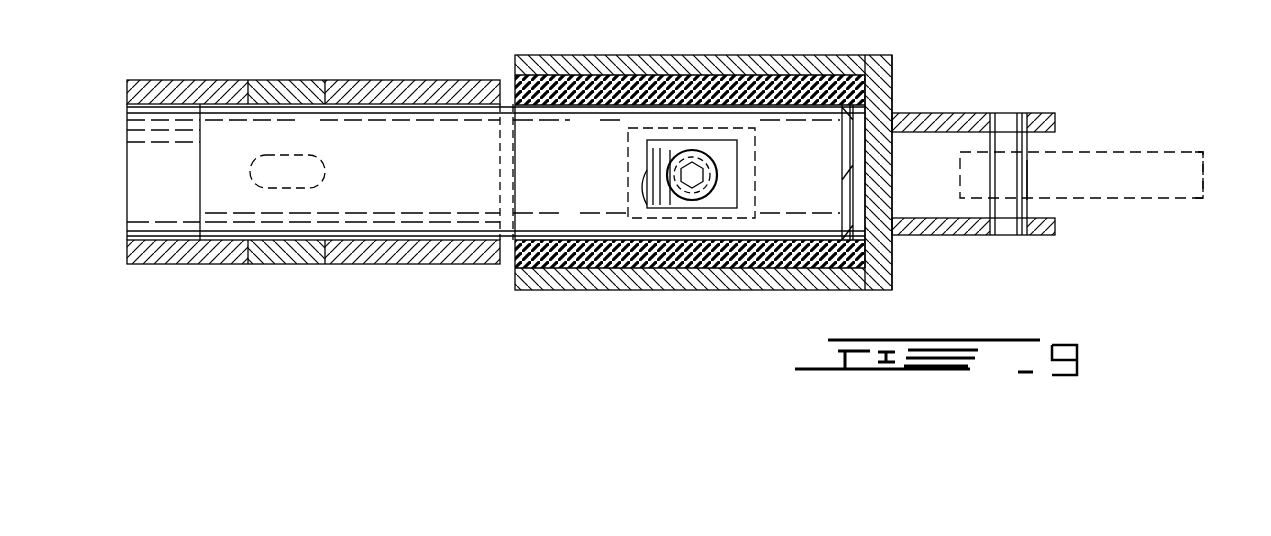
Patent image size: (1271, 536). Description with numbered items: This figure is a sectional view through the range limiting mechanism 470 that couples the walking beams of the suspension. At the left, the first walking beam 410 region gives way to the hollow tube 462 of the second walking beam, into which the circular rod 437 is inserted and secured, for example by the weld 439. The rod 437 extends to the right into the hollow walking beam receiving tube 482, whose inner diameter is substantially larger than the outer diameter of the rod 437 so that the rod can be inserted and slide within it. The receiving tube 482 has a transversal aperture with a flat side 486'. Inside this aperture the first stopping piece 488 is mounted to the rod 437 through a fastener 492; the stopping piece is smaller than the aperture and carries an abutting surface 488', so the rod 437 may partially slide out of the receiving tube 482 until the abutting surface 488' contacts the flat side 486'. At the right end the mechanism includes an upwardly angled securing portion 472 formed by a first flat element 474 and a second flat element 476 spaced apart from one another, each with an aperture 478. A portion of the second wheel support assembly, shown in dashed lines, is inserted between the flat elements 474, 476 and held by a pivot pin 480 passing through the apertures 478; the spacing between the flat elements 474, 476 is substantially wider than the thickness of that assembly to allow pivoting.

The first walking beam 410 is at (1168, 195).
The rod 437 is at (438, 127).
The weld 439 is at (305, 255).
The hollow tube 462 is at (340, 85).
The range limiting mechanism 470 is at (912, 47).
The securing portion 472 is at (940, 112).
The first flat element 474 is at (968, 240).
The second flat element 476 is at (980, 115).
The aperture 478 is at (1022, 112).
The pivot pin 480 is at (1015, 205).
The walking beam receiving tube 482 is at (540, 290).
The flat side 486' is at (667, 235).
The first stopping piece 488 is at (670, 107).
The abutting surface 488' is at (648, 272).
The fastener 492 is at (702, 188).